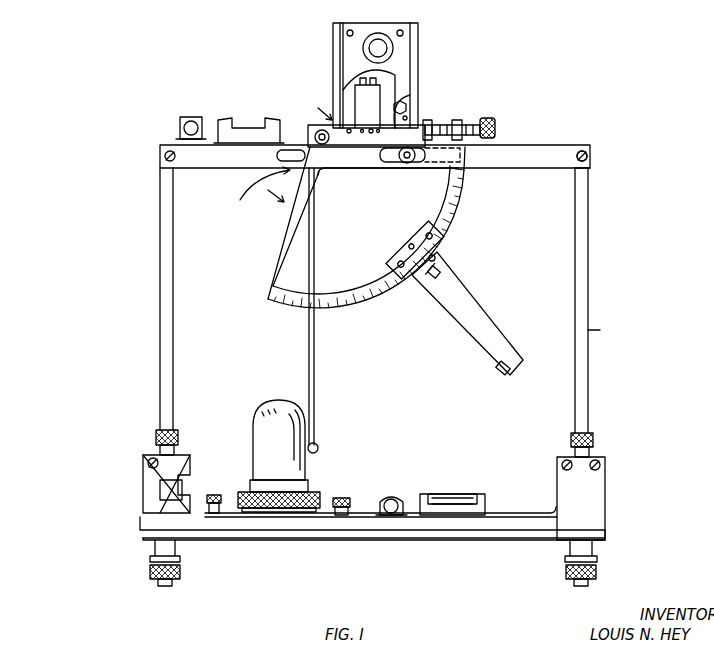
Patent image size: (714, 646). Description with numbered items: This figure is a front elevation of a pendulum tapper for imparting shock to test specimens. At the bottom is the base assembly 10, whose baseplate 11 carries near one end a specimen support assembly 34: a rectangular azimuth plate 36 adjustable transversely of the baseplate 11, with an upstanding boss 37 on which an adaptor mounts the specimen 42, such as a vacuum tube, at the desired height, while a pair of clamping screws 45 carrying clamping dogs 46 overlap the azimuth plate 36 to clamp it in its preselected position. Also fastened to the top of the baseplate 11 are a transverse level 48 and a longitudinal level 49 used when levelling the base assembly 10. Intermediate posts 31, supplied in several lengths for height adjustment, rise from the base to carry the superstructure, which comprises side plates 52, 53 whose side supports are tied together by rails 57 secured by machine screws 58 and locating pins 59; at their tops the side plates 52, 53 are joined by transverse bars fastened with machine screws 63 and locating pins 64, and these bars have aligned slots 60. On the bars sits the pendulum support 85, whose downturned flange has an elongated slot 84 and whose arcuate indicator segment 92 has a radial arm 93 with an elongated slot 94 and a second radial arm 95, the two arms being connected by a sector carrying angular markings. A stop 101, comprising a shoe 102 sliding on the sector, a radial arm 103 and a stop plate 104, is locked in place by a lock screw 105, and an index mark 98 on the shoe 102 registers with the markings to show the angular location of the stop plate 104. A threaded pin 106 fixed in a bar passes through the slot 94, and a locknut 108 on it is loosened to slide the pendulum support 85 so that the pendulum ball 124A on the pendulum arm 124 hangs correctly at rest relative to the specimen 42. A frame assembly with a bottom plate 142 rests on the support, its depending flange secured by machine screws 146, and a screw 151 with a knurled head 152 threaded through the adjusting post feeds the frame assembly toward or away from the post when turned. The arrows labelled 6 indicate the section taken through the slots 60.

The base assembly 10 is at (140, 521).
The baseplate 11 is at (557, 516).
The intermediate post 31 is at (160, 497).
The specimen support assembly 34 is at (332, 496).
The azimuth plate 36 is at (230, 512).
The boss 37 is at (276, 508).
The specimen 42 is at (268, 404).
The clamping screw 45 is at (209, 505).
The clamping dog 46 is at (218, 513).
The level 48 is at (395, 500).
The level 49 is at (450, 494).
The side plate 52 is at (600, 330).
The side plate 53 is at (168, 250).
The rail 57 is at (495, 540).
The machine screw 58 is at (150, 462).
The locating pin 59 is at (582, 465).
The slot 60 is at (300, 150).
The machine screw 63 is at (592, 150).
The locating pin 64 is at (590, 162).
The elongated slot 84 is at (462, 160).
The pendulum support 85 is at (308, 150).
The arcuate indicator segment 92 is at (464, 186).
The radial arm 93 is at (428, 172).
The elongated slot 94 is at (438, 170).
The radial arm portion 95 is at (282, 248).
The index mark 98 is at (436, 256).
The stop 101 is at (486, 312).
The shoe 102 is at (440, 240).
The radial arm 103 is at (462, 312).
The stop plate 104 is at (502, 370).
The lock screw 105 is at (442, 274).
The threaded pin 106 is at (408, 153).
The locknut 108 is at (415, 159).
The pendulum arm 124 is at (310, 340).
The pendulum ball 124A is at (320, 440).
The bottom plate 142 is at (372, 150).
The machine screw 146 is at (349, 134).
The screw 151 is at (482, 128).
The knurled head 152 is at (496, 133).
The section indicator 6 is at (286, 148).